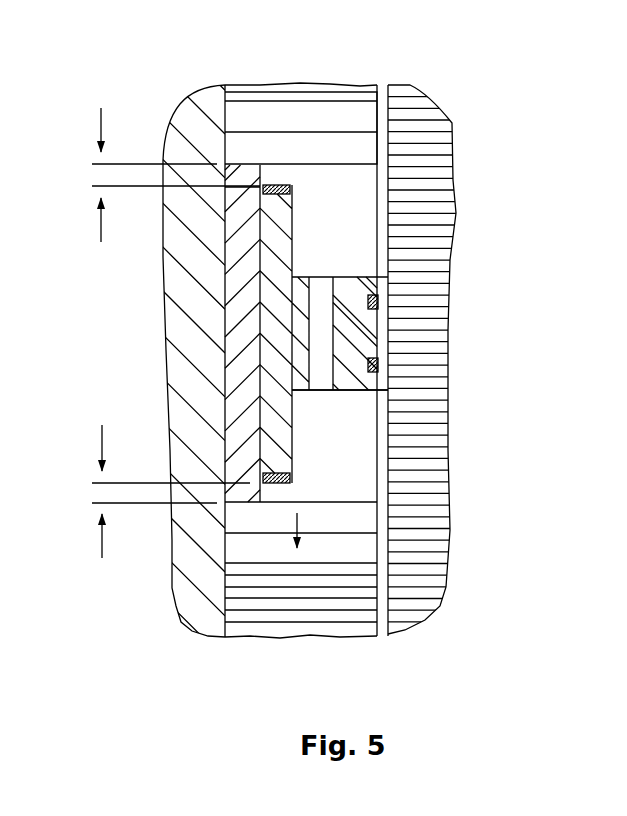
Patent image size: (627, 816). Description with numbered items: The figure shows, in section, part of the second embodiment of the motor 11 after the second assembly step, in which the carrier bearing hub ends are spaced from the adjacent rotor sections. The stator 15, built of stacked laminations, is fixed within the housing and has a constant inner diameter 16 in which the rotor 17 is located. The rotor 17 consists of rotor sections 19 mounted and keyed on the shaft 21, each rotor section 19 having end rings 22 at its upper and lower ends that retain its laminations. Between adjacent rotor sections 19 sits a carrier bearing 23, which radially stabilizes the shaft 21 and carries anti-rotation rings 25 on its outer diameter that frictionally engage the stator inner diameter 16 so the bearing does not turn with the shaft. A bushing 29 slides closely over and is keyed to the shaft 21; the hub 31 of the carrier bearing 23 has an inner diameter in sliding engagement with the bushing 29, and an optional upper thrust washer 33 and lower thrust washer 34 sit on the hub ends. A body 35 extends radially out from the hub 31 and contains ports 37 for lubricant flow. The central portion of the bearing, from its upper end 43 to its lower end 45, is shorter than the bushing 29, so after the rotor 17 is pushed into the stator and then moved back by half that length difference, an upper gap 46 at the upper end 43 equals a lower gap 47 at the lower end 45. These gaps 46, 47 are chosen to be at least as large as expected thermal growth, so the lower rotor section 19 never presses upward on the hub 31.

The motor 11 is at (492, 118).
The stator 15 is at (440, 213).
The inner diameter 16 is at (390, 187).
The rotor 17 is at (362, 66).
The rotor section 19 is at (318, 80).
The shaft 21 is at (185, 414).
The end ring 22 is at (290, 110).
The carrier bearing 23 is at (247, 321).
The anti-rotation ring 25 is at (383, 303).
The bushing 29 is at (233, 261).
The hub 31 is at (283, 235).
The upper thrust washer 33 is at (293, 188).
The lower thrust washer 34 is at (293, 475).
The body 35 is at (297, 383).
The port 37 is at (310, 283).
The upper end 43 is at (292, 187).
The lower end 45 is at (267, 483).
The upper gap 46 is at (101, 223).
The lower gap 47 is at (102, 543).